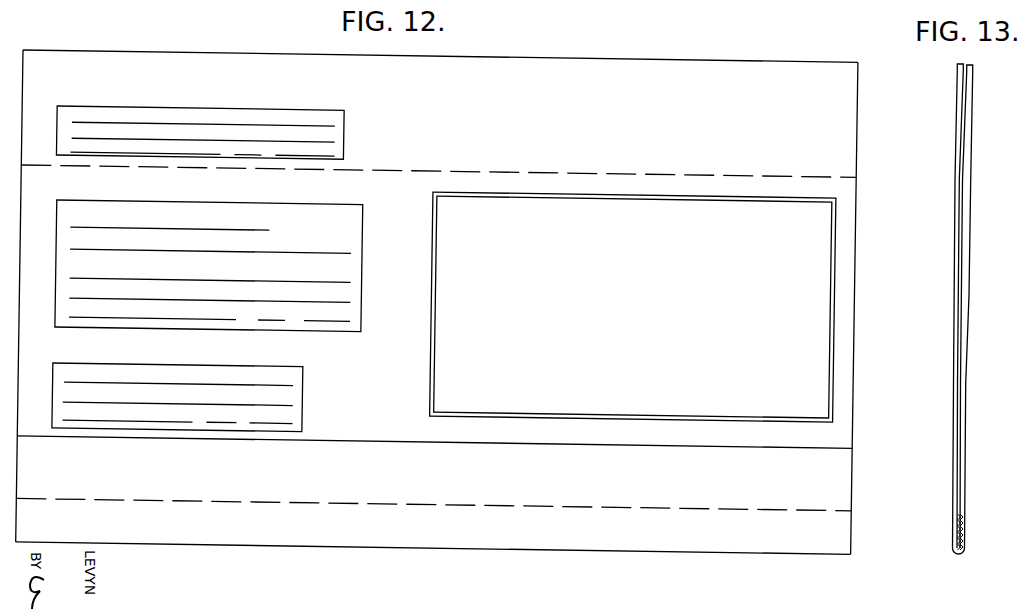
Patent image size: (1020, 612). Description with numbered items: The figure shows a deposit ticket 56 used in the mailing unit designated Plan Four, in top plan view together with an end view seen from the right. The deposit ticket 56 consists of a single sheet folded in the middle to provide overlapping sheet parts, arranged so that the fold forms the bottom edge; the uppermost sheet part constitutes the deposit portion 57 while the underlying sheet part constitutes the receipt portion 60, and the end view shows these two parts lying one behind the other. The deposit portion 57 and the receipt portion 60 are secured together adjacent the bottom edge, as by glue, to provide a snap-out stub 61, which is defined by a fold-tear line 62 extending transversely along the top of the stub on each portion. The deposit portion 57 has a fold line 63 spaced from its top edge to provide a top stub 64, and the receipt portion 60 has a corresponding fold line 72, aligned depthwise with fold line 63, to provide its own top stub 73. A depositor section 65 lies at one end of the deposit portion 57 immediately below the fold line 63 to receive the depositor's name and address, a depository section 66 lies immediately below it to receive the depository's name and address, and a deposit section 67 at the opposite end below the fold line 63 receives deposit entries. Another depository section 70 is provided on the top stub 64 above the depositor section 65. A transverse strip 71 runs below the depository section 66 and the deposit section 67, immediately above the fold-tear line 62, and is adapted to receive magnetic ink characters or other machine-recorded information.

In FIG. 12, the deposit ticket 56 is at (371, 542).
In FIG. 13, the deposit ticket 56 is at (950, 470).
In FIG. 12, the deposit portion 57 is at (850, 418).
In FIG. 13, the deposit portion 57 is at (953, 310).
In FIG. 13, the receipt portion 60 is at (968, 296).
In FIG. 12, the snap-out stub 61 is at (561, 530).
In FIG. 13, the snap-out stub 61 is at (955, 531).
In FIG. 12, the fold-tear line 62 is at (684, 499).
In FIG. 13, the fold-tear line 62 is at (953, 512).
In FIG. 12, the fold line 63 is at (542, 164).
In FIG. 13, the fold line 63 is at (955, 178).
In FIG. 12, the top stub 64 is at (627, 64).
In FIG. 13, the top stub 64 is at (957, 82).
In FIG. 12, the depositor section 65 is at (368, 227).
In FIG. 12, the depository section 66 is at (310, 394).
In FIG. 12, the deposit section 67 is at (434, 322).
In FIG. 12, the depository section 70 is at (346, 112).
In FIG. 12, the transverse strip 71 is at (380, 436).
In FIG. 13, the fold line 72 is at (972, 179).
In FIG. 13, the top stub 73 is at (975, 100).